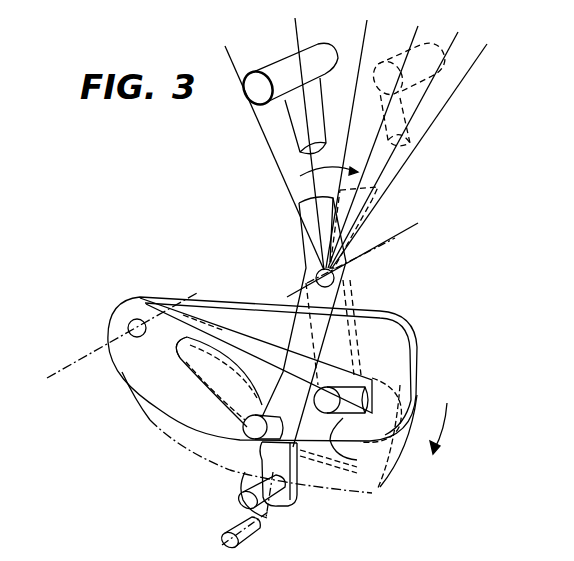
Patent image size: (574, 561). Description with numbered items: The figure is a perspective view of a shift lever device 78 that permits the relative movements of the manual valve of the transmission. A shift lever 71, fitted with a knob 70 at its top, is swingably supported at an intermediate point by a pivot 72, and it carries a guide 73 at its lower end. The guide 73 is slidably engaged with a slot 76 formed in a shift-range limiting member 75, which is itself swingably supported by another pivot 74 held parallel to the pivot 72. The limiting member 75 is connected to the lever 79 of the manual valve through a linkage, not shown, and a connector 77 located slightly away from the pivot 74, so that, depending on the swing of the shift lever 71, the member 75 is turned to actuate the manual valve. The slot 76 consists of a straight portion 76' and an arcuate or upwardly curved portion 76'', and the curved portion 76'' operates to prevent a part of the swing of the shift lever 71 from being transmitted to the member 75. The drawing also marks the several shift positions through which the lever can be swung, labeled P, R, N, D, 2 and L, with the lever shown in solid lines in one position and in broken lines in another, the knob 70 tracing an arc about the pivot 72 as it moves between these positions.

The knob 70 is at (283, 68).
The shift lever 71 is at (305, 256).
The pivot 72 is at (391, 240).
The guide 73 is at (358, 378).
The pivot 74 is at (92, 350).
The shift-range limiting member 75 is at (420, 352).
The slot 76 is at (219, 382).
The straight portion 76' is at (333, 452).
The arcuate or upwardly curved portion 76'' is at (156, 360).
The connector 77 is at (300, 488).
The shift lever device 78 is at (412, 320).
The lever of the manual valve 79 is at (277, 512).
The second gear position 2 is at (400, 140).
The park position P is at (268, 147).
The reverse position R is at (305, 136).
The neutral position N is at (348, 135).
The drive position D is at (376, 136).
The low position L is at (413, 147).